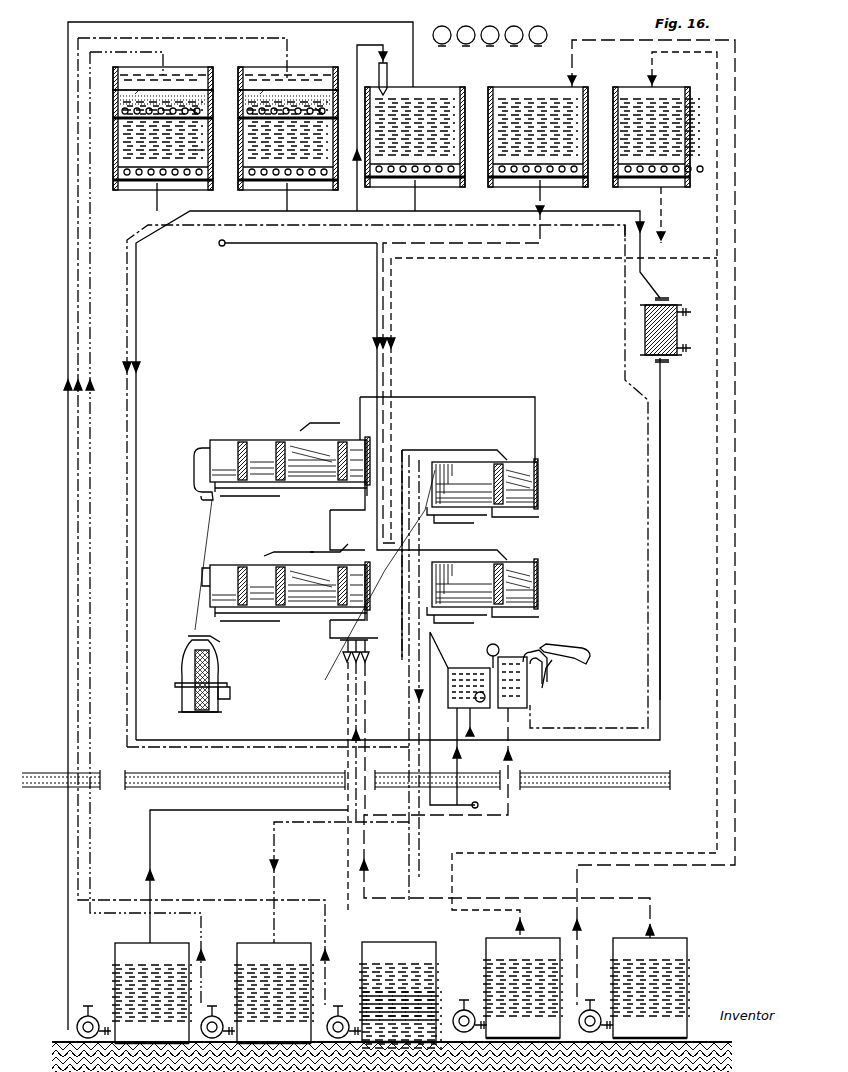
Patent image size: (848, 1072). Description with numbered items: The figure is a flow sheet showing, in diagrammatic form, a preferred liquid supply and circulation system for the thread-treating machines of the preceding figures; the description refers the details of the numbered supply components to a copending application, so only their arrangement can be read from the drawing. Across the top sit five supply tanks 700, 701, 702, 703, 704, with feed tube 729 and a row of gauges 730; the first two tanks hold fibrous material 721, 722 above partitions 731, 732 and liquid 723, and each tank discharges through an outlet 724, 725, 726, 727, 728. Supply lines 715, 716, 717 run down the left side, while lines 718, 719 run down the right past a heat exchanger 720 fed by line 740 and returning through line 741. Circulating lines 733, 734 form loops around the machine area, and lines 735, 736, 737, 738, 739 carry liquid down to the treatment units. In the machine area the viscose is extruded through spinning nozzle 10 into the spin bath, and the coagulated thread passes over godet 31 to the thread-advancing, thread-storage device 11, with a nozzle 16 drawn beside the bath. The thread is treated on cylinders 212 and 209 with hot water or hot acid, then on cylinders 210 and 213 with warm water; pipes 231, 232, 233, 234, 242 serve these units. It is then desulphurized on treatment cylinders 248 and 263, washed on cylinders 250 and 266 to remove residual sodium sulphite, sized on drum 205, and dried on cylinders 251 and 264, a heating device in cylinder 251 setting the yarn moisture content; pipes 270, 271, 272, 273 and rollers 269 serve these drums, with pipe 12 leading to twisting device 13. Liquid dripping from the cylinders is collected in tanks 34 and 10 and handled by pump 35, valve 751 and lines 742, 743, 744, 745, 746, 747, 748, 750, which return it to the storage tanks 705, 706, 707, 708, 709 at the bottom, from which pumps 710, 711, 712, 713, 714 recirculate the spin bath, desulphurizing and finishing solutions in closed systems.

The first heating tank 700 is at (161, 61).
The second heating tank 701 is at (288, 61).
The third tank 702 is at (428, 90).
The fourth tank 703 is at (536, 88).
The fifth tank 704 is at (654, 86).
The storage tank 705 is at (156, 942).
The storage tank 706 is at (282, 940).
The storage tank 707 is at (386, 944).
The storage tank 708 is at (526, 942).
The storage tank 709 is at (666, 940).
The pump 710 is at (96, 1012).
The pump 711 is at (219, 1012).
The pump 712 is at (345, 1012).
The pump 713 is at (471, 1008).
The pump 714 is at (597, 1006).
The supply line 715 is at (136, 23).
The supply line 716 is at (86, 838).
The supply line 717 is at (90, 864).
The line 718 is at (717, 738).
The line 719 is at (738, 728).
The heat exchanger 720 is at (676, 338).
The fibrous material 721 is at (138, 88).
The fibrous material 722 is at (256, 96).
The liquid 723 is at (202, 150).
The outlet pipe 724 is at (160, 202).
The outlet pipe 725 is at (296, 198).
The outlet pipe 726 is at (384, 197).
The outlet pipe 727 is at (536, 191).
The outlet pipe 728 is at (636, 197).
The feed tube 729 is at (386, 70).
The gauges 730 is at (486, 28).
The partition 731 is at (195, 114).
The partition 732 is at (316, 114).
The circulating line 733 is at (132, 220).
The circulating line 734 is at (212, 220).
The line 735 is at (274, 256).
The line 736 is at (361, 128).
The line 737 is at (377, 328).
The line 738 is at (390, 290).
The line 739 is at (392, 326).
The line 740 is at (624, 300).
The line 741 is at (660, 500).
The line 742 is at (458, 766).
The line 743 is at (432, 746).
The line 744 is at (420, 758).
The line 745 is at (434, 824).
The line 746 is at (368, 838).
The line 747 is at (350, 842).
The line 748 is at (214, 810).
The pipe 750 is at (480, 652).
The valve 751 is at (492, 803).
The spinning nozzle 10 is at (526, 690).
The thread-advancing, thread-storage device 11 is at (530, 474).
The pipe 12 is at (202, 448).
The twisting device 13 is at (180, 644).
The nozzle 16 is at (574, 640).
The godet 31 is at (498, 640).
The tank 34 is at (462, 668).
The pump 35 is at (470, 716).
The drum 205 is at (240, 560).
The cylinder 209 is at (476, 460).
The cylinder 210 is at (536, 462).
The cylinder 212 is at (472, 572).
The cylinder 213 is at (540, 576).
The pipe 231 is at (446, 460).
The pipe 232 is at (506, 450).
The pipe 233 is at (448, 562).
The pipe 234 is at (510, 558).
The pipe 242 is at (492, 533).
The treatment cylinder 248 is at (342, 436).
The cylinder 250 is at (254, 440).
The cylinder 251 is at (220, 436).
The treatment cylinder 263 is at (358, 584).
The cylinder 264 is at (224, 608).
The cylinder 266 is at (276, 618).
The roller 269 is at (290, 436).
The pipe 270 is at (332, 410).
The pipe 271 is at (258, 554).
The pipe 272 is at (290, 556).
The pipe 273 is at (326, 550).